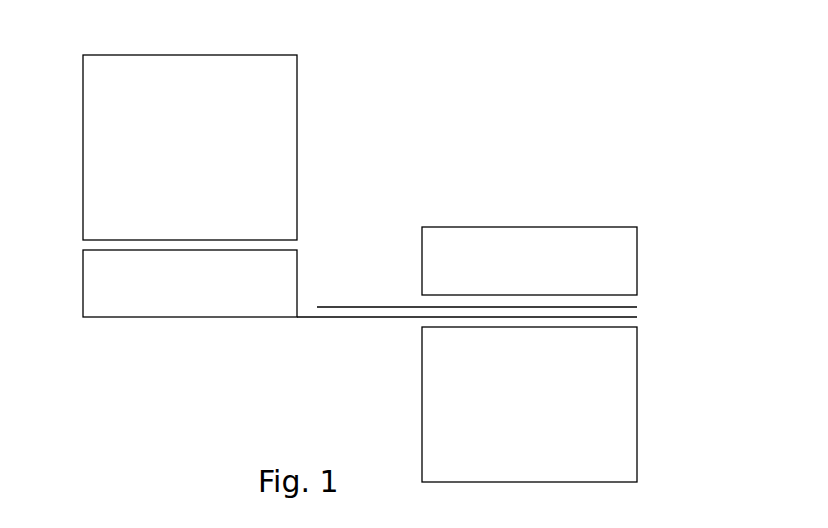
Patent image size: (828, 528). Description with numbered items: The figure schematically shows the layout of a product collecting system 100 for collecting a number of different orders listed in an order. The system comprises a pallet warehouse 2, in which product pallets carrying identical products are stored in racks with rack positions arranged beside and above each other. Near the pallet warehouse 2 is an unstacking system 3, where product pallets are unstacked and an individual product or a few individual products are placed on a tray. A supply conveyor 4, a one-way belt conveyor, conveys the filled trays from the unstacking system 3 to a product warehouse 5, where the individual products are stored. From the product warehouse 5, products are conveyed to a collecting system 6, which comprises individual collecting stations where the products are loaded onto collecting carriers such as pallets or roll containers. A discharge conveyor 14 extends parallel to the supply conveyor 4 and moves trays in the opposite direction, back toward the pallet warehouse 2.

The product collecting system 100 is at (481, 142).
The pallet warehouse 2 is at (190, 147).
The unstacking system 3 is at (190, 283).
The supply conveyor 4 is at (339, 320).
The product warehouse 5 is at (529, 404).
The collecting system 6 is at (529, 261).
The discharge conveyor 14 is at (341, 307).